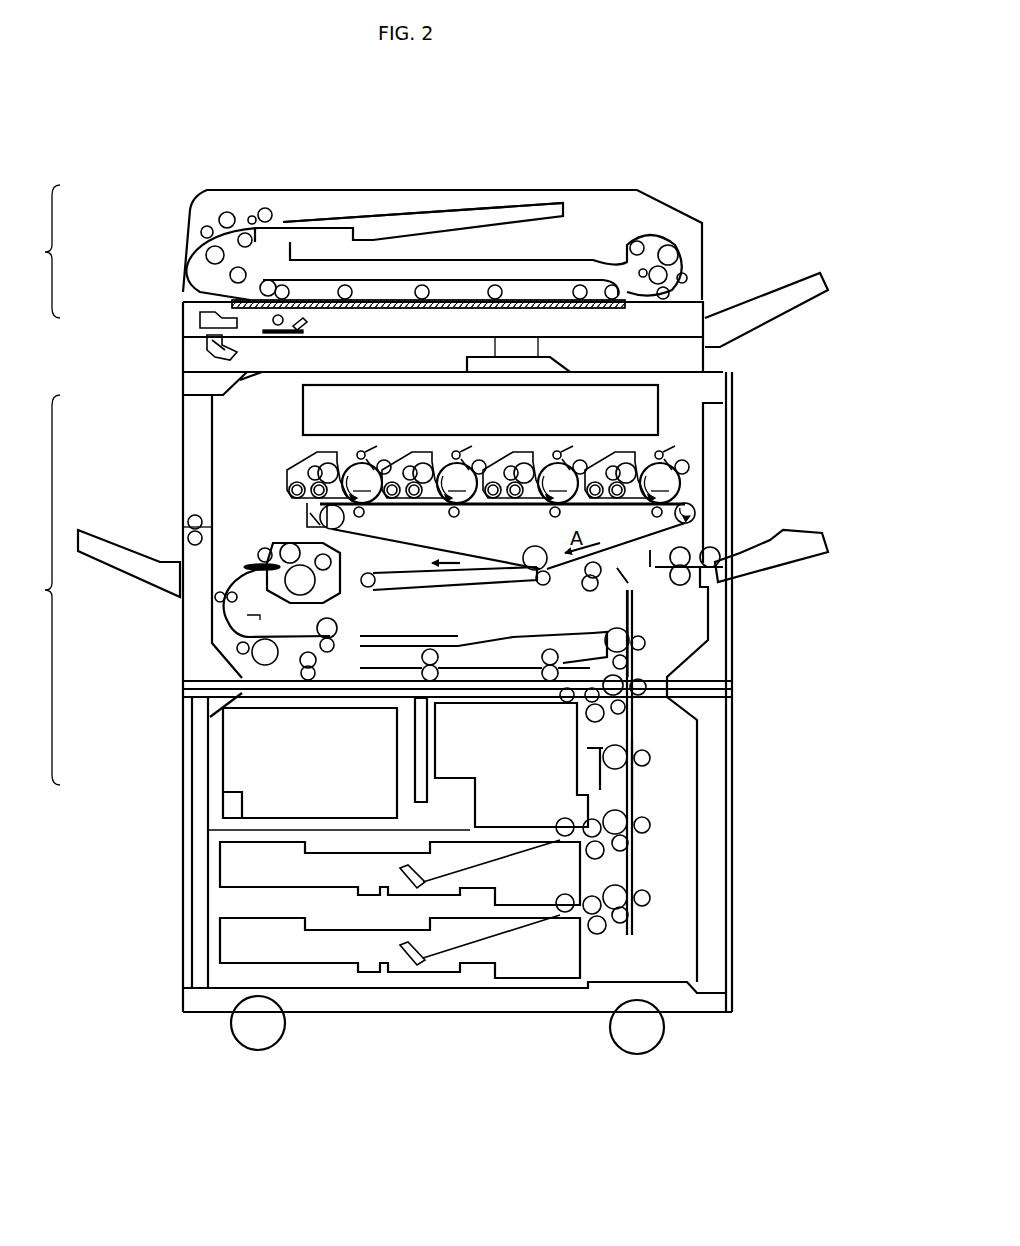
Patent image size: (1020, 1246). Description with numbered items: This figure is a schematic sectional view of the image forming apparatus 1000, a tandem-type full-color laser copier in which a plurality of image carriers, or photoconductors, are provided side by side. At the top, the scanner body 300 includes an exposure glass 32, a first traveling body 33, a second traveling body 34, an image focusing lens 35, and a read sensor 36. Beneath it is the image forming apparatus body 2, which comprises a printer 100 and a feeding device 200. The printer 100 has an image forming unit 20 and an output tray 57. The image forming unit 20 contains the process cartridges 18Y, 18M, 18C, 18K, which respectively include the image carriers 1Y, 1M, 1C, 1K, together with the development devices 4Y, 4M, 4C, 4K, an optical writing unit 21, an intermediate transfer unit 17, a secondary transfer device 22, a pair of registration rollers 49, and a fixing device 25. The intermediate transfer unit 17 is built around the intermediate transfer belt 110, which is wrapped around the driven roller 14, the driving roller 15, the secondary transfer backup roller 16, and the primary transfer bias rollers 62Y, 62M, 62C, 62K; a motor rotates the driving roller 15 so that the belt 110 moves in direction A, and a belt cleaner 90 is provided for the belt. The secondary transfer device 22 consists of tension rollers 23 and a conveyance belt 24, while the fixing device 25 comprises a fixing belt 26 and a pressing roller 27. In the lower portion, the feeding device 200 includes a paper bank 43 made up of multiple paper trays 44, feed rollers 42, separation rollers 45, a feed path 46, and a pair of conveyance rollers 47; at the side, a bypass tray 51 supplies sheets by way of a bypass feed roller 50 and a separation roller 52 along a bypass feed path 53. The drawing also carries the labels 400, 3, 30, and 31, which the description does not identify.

The image forming apparatus 1000 is at (660, 146).
The automatic document feeder 400 is at (160, 217).
The scanner body 300 is at (160, 324).
The image reading unit 3 is at (45, 251).
The printer 100 is at (162, 431).
The image forming apparatus body 2 is at (45, 590).
The feeding device 200 is at (162, 791).
The document tray 30 is at (425, 215).
The document feed path 31 is at (470, 228).
The exposure glass 32 is at (535, 300).
The first traveling body 33 is at (310, 325).
The second traveling body 34 is at (208, 333).
The image focusing lens 35 is at (470, 352).
The read sensor 36 is at (525, 352).
The optical writing unit 21 is at (662, 410).
The image carrier 1Y is at (366, 481).
The image carrier 1M is at (461, 481).
The image carrier 1C is at (562, 481).
The image carrier 1K is at (664, 481).
The development device 4Y is at (310, 456).
The development device 4M is at (408, 457).
The development device 4C is at (506, 457).
The development device 4K is at (609, 457).
The process cartridge 18Y is at (364, 447).
The process cartridge 18M is at (459, 447).
The process cartridge 18C is at (560, 447).
The process cartridge 18K is at (685, 438).
The image forming unit 20 is at (286, 463).
The belt cleaner 90 is at (308, 511).
The intermediate transfer unit 17 is at (296, 508).
The driven roller 14 is at (336, 527).
The driving roller 15 is at (694, 510).
The secondary transfer backup roller 16 is at (527, 559).
The primary transfer bias roller 62Y is at (364, 514).
The primary transfer bias roller 62M is at (451, 516).
The primary transfer bias roller 62C is at (551, 514).
The primary transfer bias roller 62K is at (653, 514).
The intermediate transfer belt 110 is at (415, 563).
The conveyance belt 24 is at (480, 584).
The tension rollers 23 is at (374, 586).
The secondary transfer device 22 is at (556, 585).
The pair of registration rollers 49 is at (598, 590).
The bypass feed path 53 is at (642, 570).
The separation roller 52 is at (683, 586).
The bypass feed roller 50 is at (712, 550).
The bypass tray 51 is at (782, 560).
The output tray 57 is at (105, 560).
The fixing device 25 is at (262, 597).
The fixing belt 26 is at (312, 544).
The pressing roller 27 is at (320, 592).
The feed rollers 42 is at (562, 700).
The separation rollers 45 is at (588, 715).
The pair of conveyance rollers 47 is at (625, 693).
The feed path 46 is at (636, 778).
The paper bank 43 is at (210, 877).
The paper trays 44 is at (163, 930).